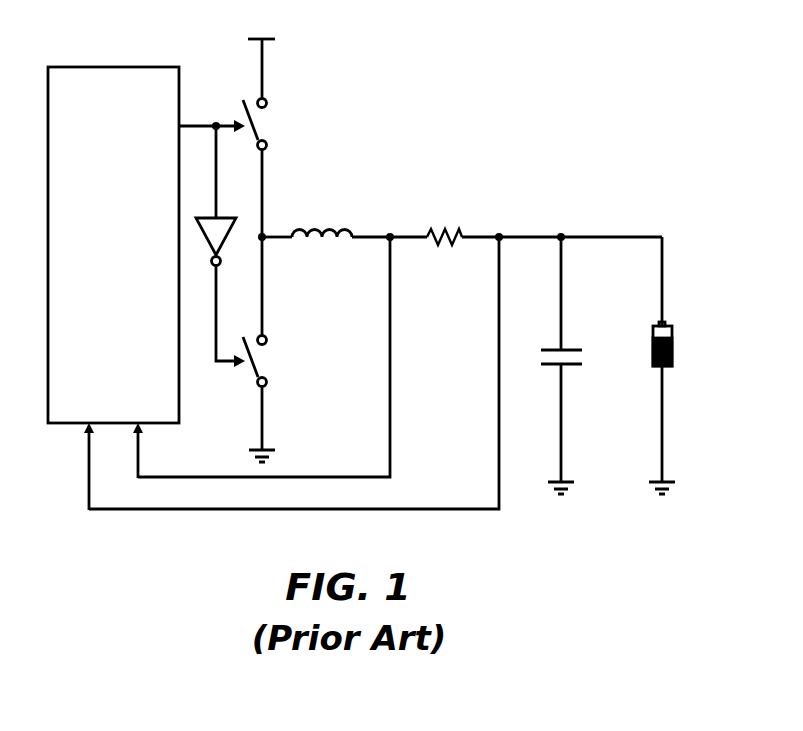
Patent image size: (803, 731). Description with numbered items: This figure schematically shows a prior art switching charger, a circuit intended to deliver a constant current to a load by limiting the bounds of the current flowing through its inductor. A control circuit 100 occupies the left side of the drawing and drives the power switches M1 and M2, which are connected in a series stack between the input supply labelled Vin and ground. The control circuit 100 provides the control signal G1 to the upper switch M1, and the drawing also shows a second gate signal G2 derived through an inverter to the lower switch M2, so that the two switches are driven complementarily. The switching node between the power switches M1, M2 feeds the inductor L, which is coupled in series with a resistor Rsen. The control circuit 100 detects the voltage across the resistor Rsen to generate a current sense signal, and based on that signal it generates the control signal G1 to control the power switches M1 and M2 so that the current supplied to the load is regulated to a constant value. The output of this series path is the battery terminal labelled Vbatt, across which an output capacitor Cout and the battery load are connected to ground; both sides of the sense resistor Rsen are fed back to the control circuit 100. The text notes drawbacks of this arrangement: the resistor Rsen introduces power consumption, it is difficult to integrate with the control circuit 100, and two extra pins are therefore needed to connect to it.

The control circuit 100 is at (113, 288).
The input voltage Vin is at (261, 54).
The power switch M1 is at (273, 168).
The power switch M2 is at (273, 349).
The control signal G1 is at (212, 118).
The second gate signal G2 is at (220, 260).
The inductor L is at (322, 222).
The resistor Rsen is at (443, 226).
The output capacitor Cout is at (588, 365).
The battery voltage Vbatt is at (640, 352).